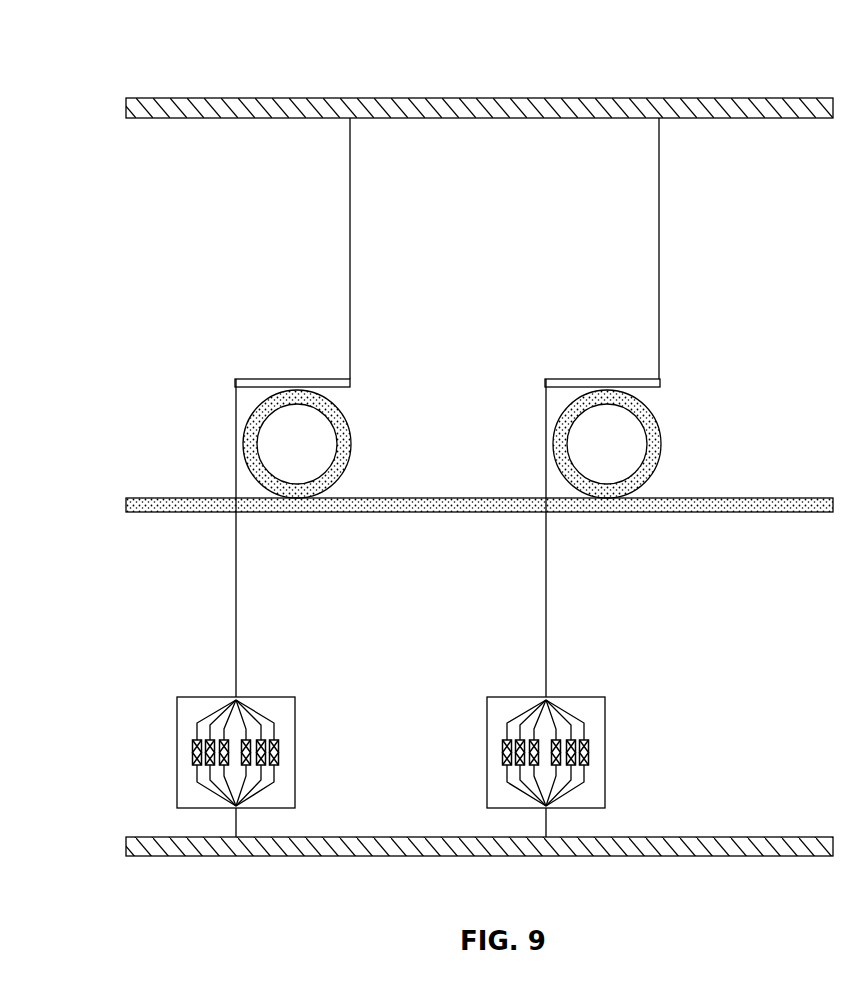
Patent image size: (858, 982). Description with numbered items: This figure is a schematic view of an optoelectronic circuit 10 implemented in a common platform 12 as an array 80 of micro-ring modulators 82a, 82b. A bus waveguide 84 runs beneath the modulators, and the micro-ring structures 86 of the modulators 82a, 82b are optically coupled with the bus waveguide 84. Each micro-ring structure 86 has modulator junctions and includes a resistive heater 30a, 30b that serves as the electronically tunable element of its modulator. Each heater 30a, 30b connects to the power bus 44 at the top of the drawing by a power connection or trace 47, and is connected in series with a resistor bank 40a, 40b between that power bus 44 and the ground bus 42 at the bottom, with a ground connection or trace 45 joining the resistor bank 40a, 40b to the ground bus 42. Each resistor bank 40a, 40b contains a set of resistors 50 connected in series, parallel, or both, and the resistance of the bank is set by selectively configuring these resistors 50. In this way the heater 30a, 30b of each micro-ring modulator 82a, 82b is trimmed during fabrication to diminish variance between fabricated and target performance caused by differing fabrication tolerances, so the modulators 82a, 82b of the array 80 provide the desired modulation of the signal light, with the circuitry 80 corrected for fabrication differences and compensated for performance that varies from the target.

The optoelectronic circuit 10 is at (106, 56).
The common platform 12 is at (497, 70).
The power bus 44 is at (780, 97).
The ground bus 42 is at (752, 856).
The bus waveguide 84 is at (178, 513).
The micro-ring modulator array 80 is at (186, 273).
The resistive heater 30a is at (283, 379).
The resistive heater 30b is at (599, 379).
The micro-ring modulator 82a is at (370, 411).
The micro-ring modulator 82b is at (690, 397).
The micro-ring structure 86 is at (352, 447).
The power connection or trace 47 is at (235, 614).
The ground connection or trace 45 is at (236, 822).
The resistor bank 40a is at (160, 744).
The resistor bank 40b is at (470, 744).
The resistors 50 is at (280, 752).